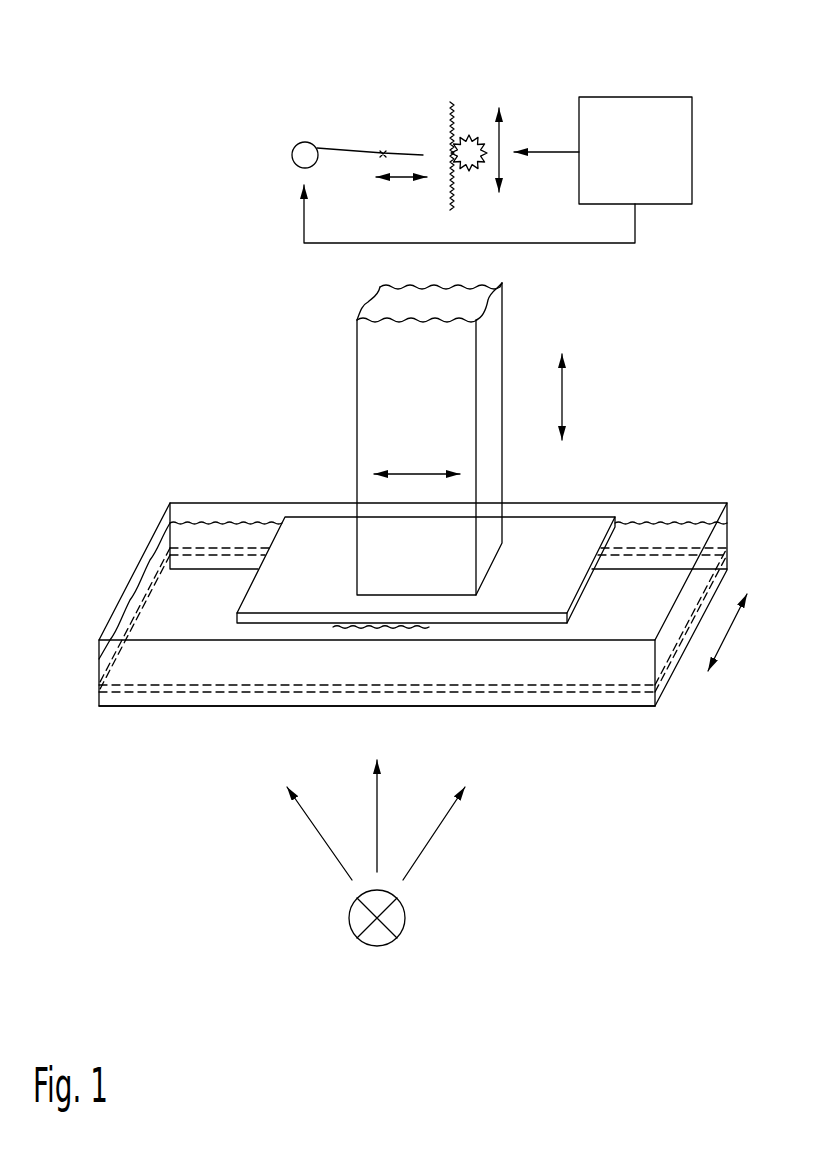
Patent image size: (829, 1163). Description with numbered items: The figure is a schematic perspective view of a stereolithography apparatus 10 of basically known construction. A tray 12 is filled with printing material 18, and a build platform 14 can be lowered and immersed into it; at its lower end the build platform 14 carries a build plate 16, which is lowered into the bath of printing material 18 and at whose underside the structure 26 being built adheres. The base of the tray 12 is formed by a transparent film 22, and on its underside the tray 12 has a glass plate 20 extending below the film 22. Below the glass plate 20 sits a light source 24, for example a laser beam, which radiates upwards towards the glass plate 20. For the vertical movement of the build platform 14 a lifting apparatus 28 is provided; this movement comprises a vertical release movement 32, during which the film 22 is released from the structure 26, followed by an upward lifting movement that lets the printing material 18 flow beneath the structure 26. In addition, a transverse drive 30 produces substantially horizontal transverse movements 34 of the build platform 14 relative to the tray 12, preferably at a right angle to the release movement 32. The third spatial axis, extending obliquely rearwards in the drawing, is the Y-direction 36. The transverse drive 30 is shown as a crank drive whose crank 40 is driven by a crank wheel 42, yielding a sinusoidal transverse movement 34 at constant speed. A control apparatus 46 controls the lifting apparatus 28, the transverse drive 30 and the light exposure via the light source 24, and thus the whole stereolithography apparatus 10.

The stereolithography apparatus 10 is at (168, 927).
The tray 12 is at (717, 535).
The build platform 14 is at (277, 397).
The build plate 16 is at (569, 540).
The printing material 18 is at (186, 616).
The glass plate 20 is at (195, 707).
The film 22 is at (582, 696).
The light source 24 is at (397, 923).
The structure 26 is at (380, 626).
The lifting apparatus 28 is at (462, 88).
The transverse drive 30 is at (378, 128).
The release movement 32 is at (566, 397).
The transverse movements 34 is at (407, 472).
The Y-direction 36 is at (728, 633).
The crank 40 is at (334, 147).
The crank wheel 42 is at (292, 155).
The control apparatus 46 is at (647, 166).